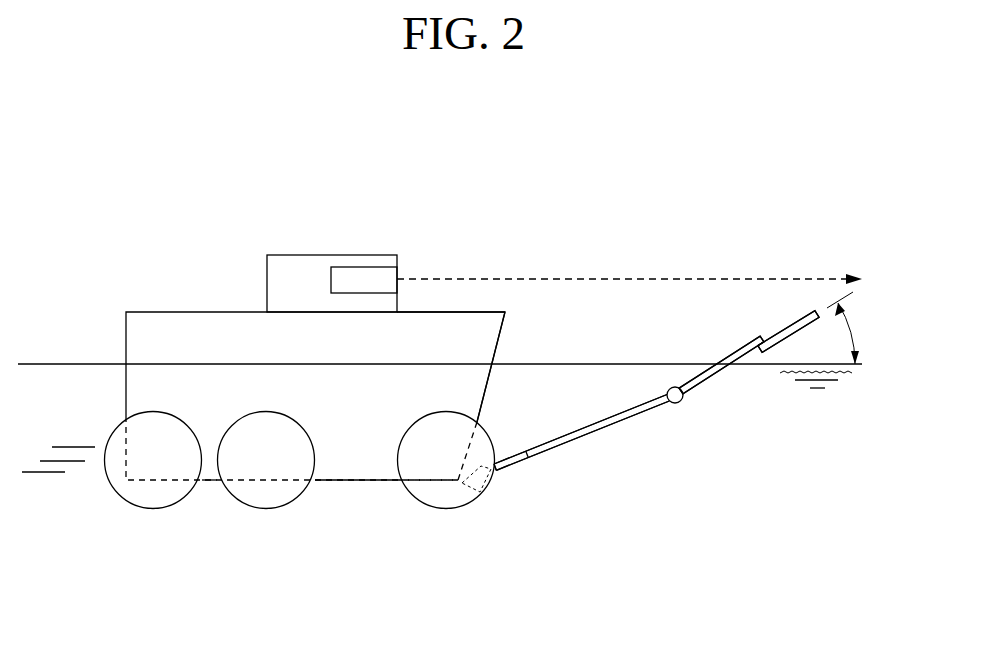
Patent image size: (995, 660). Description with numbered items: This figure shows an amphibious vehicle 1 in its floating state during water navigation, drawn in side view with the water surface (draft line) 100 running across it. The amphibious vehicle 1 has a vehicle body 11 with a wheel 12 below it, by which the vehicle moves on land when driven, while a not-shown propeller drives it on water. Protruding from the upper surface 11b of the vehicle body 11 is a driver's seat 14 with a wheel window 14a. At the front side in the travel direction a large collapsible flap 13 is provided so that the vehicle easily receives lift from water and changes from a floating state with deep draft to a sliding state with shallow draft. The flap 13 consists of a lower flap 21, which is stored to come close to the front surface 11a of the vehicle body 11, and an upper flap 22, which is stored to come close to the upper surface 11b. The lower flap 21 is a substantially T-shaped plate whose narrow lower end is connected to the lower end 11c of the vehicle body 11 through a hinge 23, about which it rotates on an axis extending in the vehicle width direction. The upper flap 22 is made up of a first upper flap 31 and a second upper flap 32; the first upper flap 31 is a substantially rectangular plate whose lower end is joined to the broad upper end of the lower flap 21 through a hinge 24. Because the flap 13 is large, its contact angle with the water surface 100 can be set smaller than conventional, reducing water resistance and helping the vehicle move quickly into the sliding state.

The amphibious vehicle 1 is at (550, 215).
The water surface 100 is at (61, 362).
The vehicle body 11 is at (160, 300).
The front surface 11a is at (500, 340).
The upper surface 11b is at (440, 312).
The lower end 11c is at (457, 484).
The wheel 12 is at (445, 509).
The flap 13 is at (620, 446).
The driver's seat 14 is at (291, 255).
The wheel window 14a is at (358, 267).
The lower flap 21 is at (571, 441).
The upper flap 22 is at (815, 474).
The hinge 23 is at (472, 505).
The hinge 24 is at (675, 404).
The first upper flap 31 is at (722, 370).
The second upper flap 32 is at (790, 336).